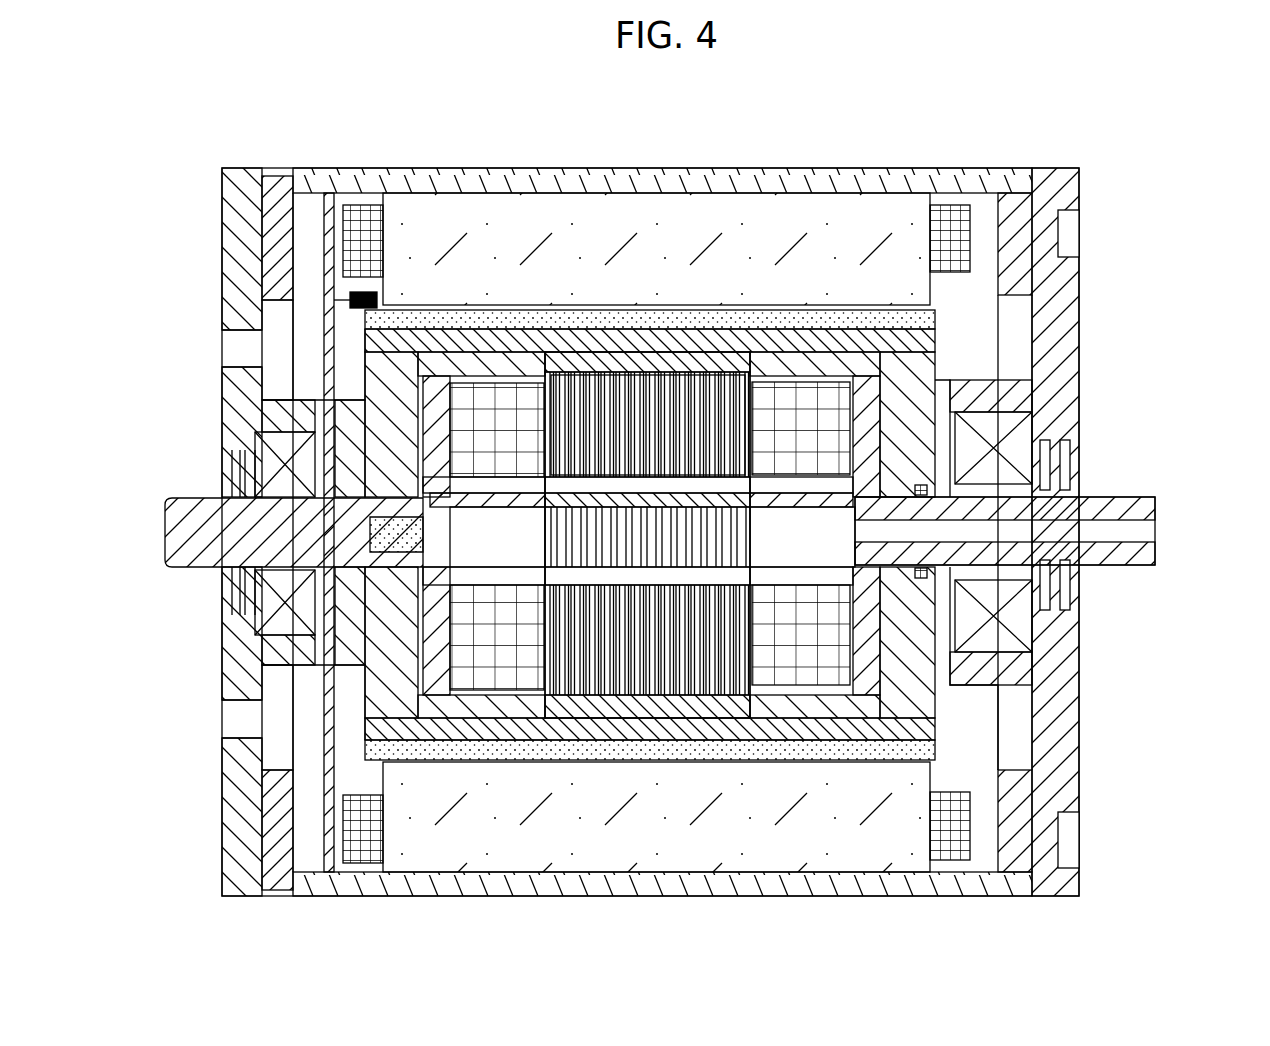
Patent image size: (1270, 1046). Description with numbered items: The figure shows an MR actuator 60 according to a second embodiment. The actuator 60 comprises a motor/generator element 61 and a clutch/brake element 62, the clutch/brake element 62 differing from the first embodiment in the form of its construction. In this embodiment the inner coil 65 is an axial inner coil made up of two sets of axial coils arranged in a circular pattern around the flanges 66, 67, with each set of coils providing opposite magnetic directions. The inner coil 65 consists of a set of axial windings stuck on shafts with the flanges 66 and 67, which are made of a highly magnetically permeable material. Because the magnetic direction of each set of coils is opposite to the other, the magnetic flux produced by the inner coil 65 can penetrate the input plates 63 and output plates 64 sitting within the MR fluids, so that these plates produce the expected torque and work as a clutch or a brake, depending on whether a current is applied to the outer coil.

The MR actuator 60 is at (1146, 148).
The motor/generator element 61 is at (930, 288).
The clutch/brake element 62 is at (880, 415).
The input plates 63 is at (547, 378).
The output plates 64 is at (553, 415).
The inner coil 65 is at (828, 646).
The flange 66 is at (440, 632).
The flange 67 is at (862, 604).